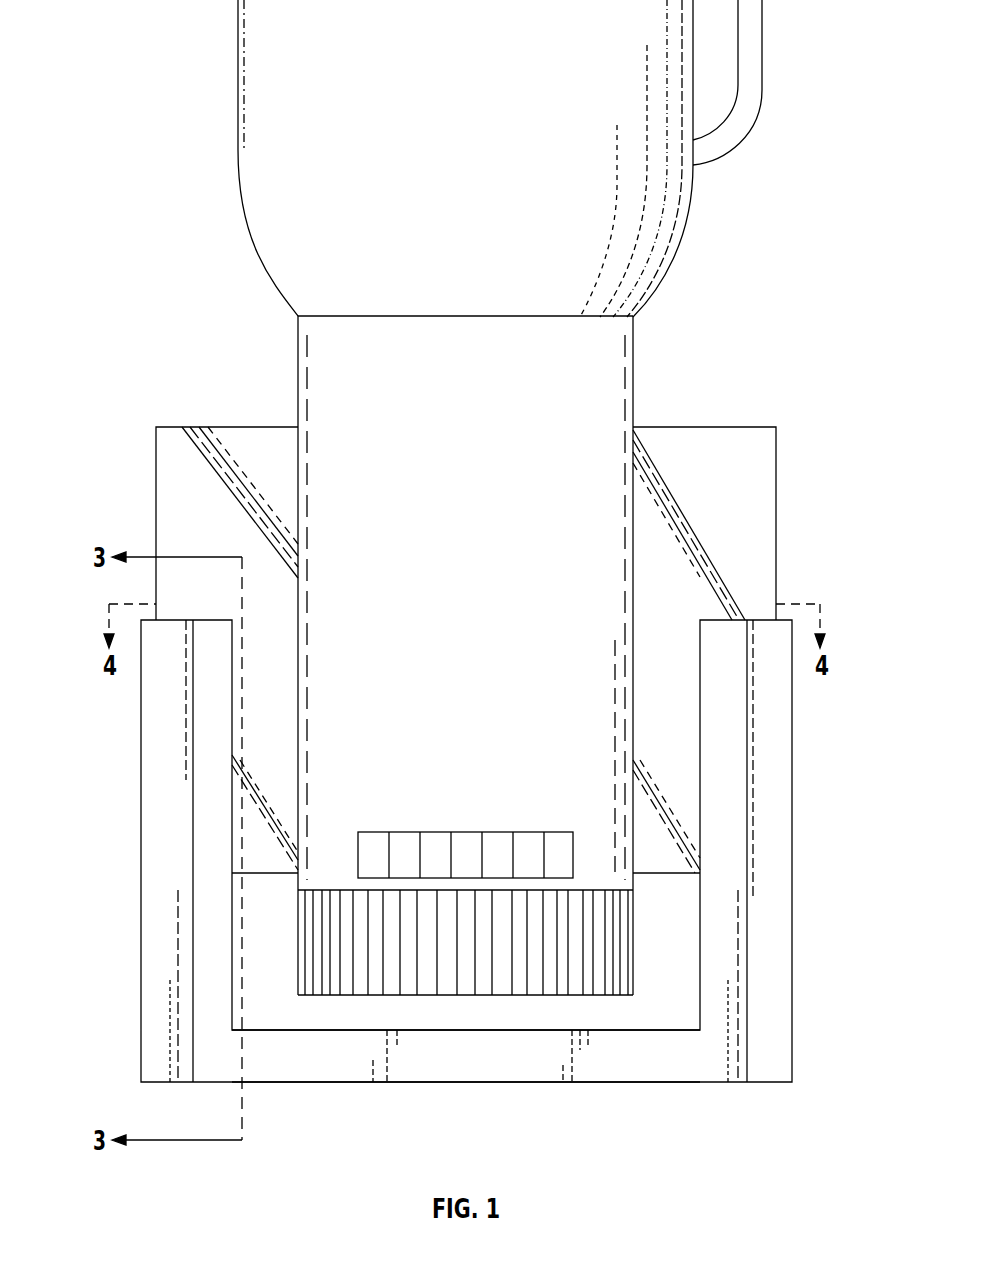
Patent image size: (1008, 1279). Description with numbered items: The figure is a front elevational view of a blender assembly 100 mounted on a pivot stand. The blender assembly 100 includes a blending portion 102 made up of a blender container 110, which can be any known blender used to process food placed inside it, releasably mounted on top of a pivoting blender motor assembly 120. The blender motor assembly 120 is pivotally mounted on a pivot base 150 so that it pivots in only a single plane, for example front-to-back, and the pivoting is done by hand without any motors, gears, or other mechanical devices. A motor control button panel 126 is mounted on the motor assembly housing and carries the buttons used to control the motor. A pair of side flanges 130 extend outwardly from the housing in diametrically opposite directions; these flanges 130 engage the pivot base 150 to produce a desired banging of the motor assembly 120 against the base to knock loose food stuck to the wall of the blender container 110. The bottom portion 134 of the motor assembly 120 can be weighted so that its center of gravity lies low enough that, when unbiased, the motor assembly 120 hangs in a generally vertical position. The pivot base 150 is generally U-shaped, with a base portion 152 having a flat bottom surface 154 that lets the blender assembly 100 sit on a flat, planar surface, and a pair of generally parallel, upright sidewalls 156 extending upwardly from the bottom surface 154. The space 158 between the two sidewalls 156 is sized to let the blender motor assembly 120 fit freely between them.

The blender assembly 100 is at (141, 239).
The blending portion 102 is at (296, 330).
The blender container 110 is at (672, 245).
The pivoting blender motor assembly 120 is at (633, 390).
The motor control button panel 126 is at (497, 832).
The side flanges 130 is at (155, 523).
The bottom portion 134 is at (480, 1000).
The pivot base 150 is at (792, 997).
The base portion 152 is at (517, 1083).
The flat bottom surface 154 is at (628, 1083).
The sidewalls 156 is at (792, 820).
The space 158 is at (287, 1010).